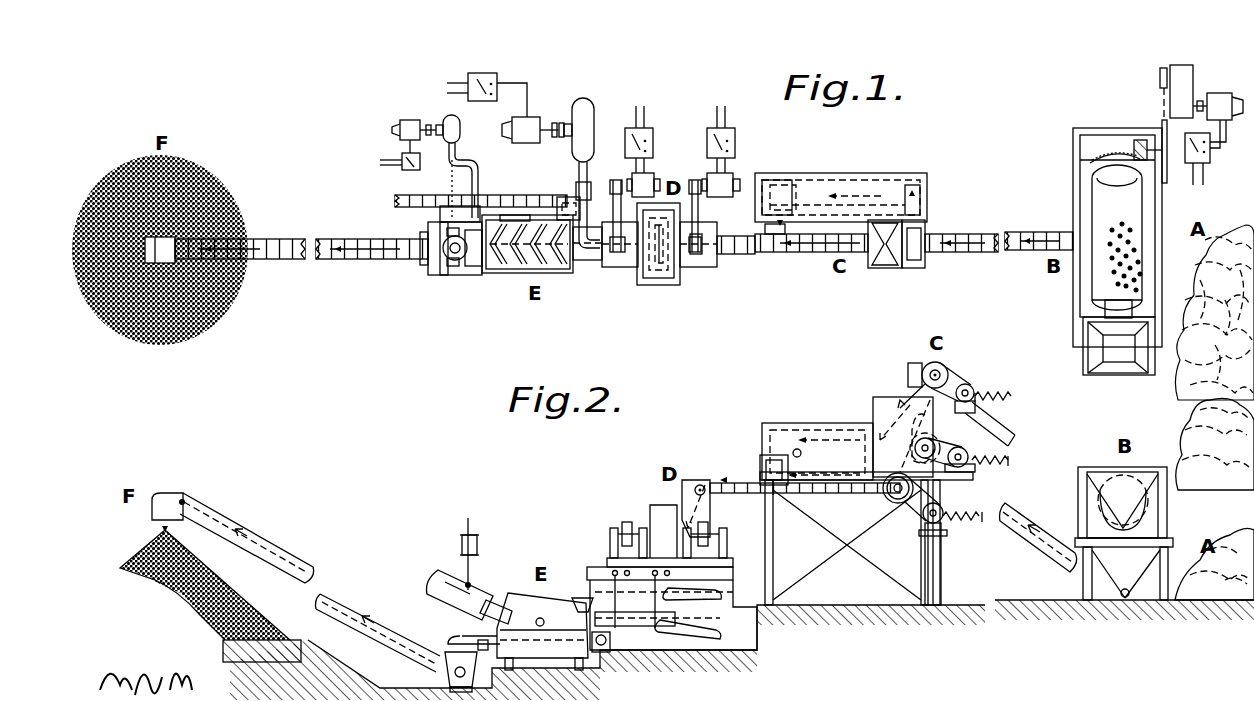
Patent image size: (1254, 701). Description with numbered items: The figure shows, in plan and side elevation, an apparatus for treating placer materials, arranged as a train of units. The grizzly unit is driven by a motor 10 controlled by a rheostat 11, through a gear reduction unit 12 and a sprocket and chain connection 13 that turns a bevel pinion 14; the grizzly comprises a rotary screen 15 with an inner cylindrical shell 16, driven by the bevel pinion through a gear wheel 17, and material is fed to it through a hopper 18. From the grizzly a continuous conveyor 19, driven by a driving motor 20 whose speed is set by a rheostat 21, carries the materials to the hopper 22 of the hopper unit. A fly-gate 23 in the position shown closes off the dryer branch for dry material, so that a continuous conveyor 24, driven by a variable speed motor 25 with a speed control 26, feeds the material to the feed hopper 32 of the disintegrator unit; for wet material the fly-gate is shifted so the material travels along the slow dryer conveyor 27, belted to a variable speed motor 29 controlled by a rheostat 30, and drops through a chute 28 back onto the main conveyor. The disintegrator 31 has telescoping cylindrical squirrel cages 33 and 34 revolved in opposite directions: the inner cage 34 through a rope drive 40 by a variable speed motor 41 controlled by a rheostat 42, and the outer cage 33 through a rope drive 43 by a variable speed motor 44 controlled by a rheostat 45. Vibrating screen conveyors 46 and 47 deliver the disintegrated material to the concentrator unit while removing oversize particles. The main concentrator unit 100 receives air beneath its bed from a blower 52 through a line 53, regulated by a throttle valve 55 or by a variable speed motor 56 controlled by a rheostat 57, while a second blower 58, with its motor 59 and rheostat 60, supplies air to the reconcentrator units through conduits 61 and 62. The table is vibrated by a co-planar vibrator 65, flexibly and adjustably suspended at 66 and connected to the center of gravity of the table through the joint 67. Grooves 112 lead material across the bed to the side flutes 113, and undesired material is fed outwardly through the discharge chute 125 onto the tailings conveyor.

In FIG. 1, the motor 10 is at (1222, 95).
In FIG. 1, the rheostat 11 is at (1212, 160).
In FIG. 1, the gear reduction unit 12 is at (1185, 70).
In FIG. 1, the sprocket and chain connection 13 is at (1160, 99).
In FIG. 1, the bevel pinion 14 is at (1141, 140).
In FIG. 1, the rotary screen 15 is at (1136, 206).
In FIG. 2, the rotary screen 15 is at (1142, 522).
In FIG. 1, the inner cylindrical shell 16 is at (1096, 173).
In FIG. 1, the gear wheel 17 is at (1113, 149).
In FIG. 1, the hopper 18 is at (1104, 340).
In FIG. 1, the continuous conveyor 19 is at (988, 232).
In FIG. 2, the continuous conveyor 19 is at (1017, 428).
In FIG. 2, the driving motor 20 is at (969, 385).
In FIG. 2, the rheostat 21 is at (1020, 398).
In FIG. 1, the hopper 22 is at (882, 266).
In FIG. 2, the hopper 22 is at (874, 404).
In FIG. 1, the fly-gate 23 is at (913, 266).
In FIG. 2, the fly-gate 23 is at (898, 402).
In FIG. 1, the continuous conveyor 24 is at (857, 249).
In FIG. 2, the continuous conveyor 24 is at (836, 486).
In FIG. 2, the variable speed motor 25 is at (940, 510).
In FIG. 2, the speed control 26 is at (985, 535).
In FIG. 1, the dryer conveyor 27 is at (866, 180).
In FIG. 2, the dryer conveyor 27 is at (806, 430).
In FIG. 1, the chute 28 is at (772, 182).
In FIG. 2, the chute 28 is at (765, 472).
In FIG. 2, the variable speed motor 29 is at (952, 446).
In FIG. 2, the rheostat 30 is at (1006, 460).
In FIG. 1, the disintegrator 31 is at (640, 280).
In FIG. 2, the disintegrator 31 is at (662, 509).
In FIG. 1, the feed hopper 32 is at (700, 268).
In FIG. 2, the feed hopper 32 is at (690, 480).
In FIG. 1, the squirrel cage 33 is at (656, 288).
In FIG. 1, the squirrel cage 34 is at (668, 288).
In FIG. 1, the rope drive 40 is at (698, 205).
In FIG. 2, the rope drive 40 is at (712, 527).
In FIG. 1, the variable speed motor 41 is at (714, 182).
In FIG. 1, the rheostat 42 is at (707, 143).
In FIG. 1, the rope drive 43 is at (582, 210).
In FIG. 2, the rope drive 43 is at (630, 526).
In FIG. 1, the variable speed motor 44 is at (634, 182).
In FIG. 1, the rheostat 45 is at (626, 143).
In FIG. 2, the vibrating screen 46 is at (733, 585).
In FIG. 2, the vibrating screen 47 is at (698, 628).
In FIG. 1, the blower 52 is at (590, 111).
In FIG. 1, the line 53 is at (580, 170).
In FIG. 2, the line 53 is at (602, 654).
In FIG. 1, the throttle valve 55 is at (578, 190).
In FIG. 1, the variable speed motor 56 is at (527, 122).
In FIG. 1, the rheostat 57 is at (486, 76).
In FIG. 1, the blower 58 is at (458, 126).
In FIG. 1, the motor 59 is at (408, 125).
In FIG. 1, the rheostat 60 is at (400, 166).
In FIG. 1, the conduit 61 is at (476, 174).
In FIG. 1, the conduit 62 is at (468, 184).
In FIG. 1, the vibrator 65 is at (426, 258).
In FIG. 2, the vibrator 65 is at (443, 584).
In FIG. 2, the suspension 66 is at (472, 527).
In FIG. 2, the joint 67 is at (544, 626).
In FIG. 1, the main concentrator unit 100 is at (556, 275).
In FIG. 1, the grooves 112 is at (513, 272).
In FIG. 1, the side flutes 113 is at (525, 273).
In FIG. 1, the discharge chute 125 is at (442, 229).
In FIG. 2, the discharge chute 125 is at (463, 627).